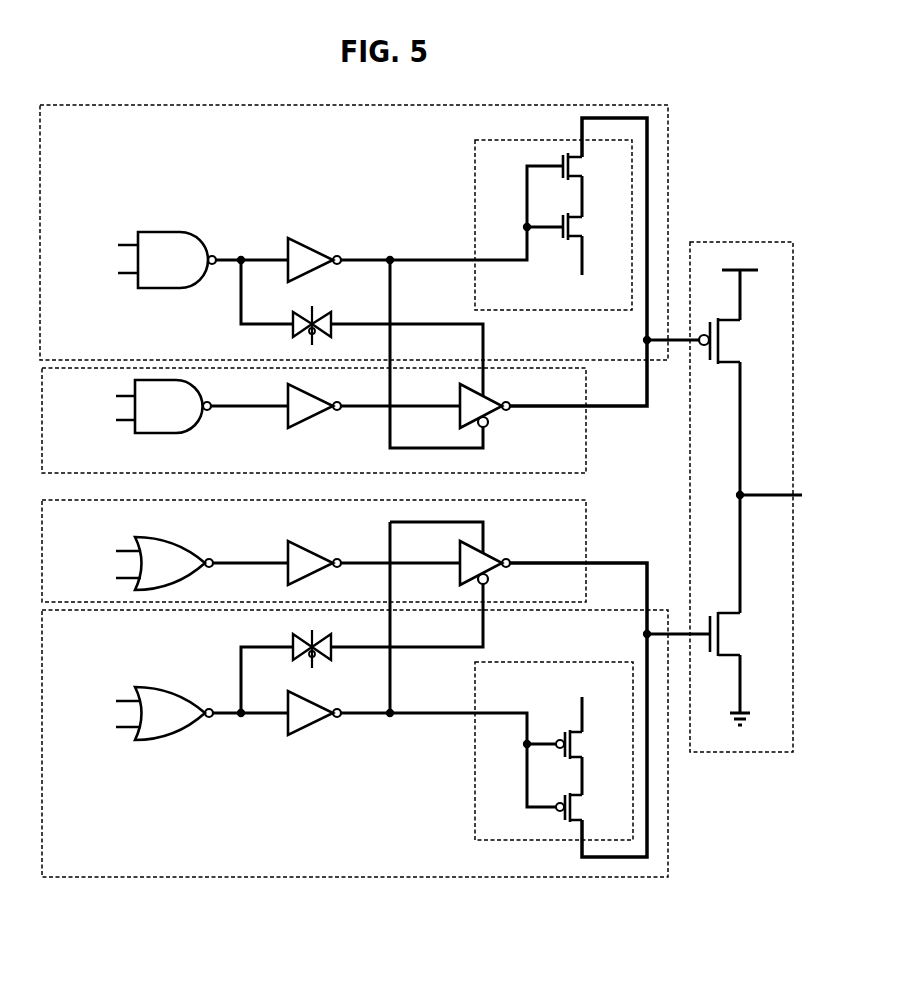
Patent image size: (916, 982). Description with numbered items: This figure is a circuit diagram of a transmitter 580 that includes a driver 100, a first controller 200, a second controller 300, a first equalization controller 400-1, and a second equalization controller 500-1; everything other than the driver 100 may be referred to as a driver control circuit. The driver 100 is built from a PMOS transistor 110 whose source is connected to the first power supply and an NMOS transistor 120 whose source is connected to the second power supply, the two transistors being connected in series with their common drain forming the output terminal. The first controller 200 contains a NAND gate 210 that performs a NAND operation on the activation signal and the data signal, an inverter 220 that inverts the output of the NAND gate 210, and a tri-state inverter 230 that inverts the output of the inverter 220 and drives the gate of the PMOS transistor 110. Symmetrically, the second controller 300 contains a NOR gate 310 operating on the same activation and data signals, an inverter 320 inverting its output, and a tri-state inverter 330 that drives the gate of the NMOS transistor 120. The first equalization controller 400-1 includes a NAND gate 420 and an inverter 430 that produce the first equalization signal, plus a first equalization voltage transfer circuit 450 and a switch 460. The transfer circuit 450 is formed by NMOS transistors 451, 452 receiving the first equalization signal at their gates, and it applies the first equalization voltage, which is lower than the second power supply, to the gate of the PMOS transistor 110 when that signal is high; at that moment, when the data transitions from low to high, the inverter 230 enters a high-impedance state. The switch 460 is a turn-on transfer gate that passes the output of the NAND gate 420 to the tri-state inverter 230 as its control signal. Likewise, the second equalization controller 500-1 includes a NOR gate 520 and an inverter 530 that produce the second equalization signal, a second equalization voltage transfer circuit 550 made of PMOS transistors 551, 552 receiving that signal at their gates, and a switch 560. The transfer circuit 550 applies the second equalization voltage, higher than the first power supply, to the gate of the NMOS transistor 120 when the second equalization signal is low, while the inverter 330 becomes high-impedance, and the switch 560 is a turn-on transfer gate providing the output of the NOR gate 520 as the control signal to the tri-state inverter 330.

The transmitter 580 is at (826, 137).
The first equalization controller 400-1 is at (668, 176).
The NAND gate 420 is at (177, 260).
The inverter 430 is at (318, 252).
The first equalization voltage transfer circuit 450 is at (475, 172).
The NMOS transistor 451 is at (578, 168).
The NMOS transistor 452 is at (578, 229).
The switch 460 is at (292, 333).
The first controller 200 is at (586, 448).
The NAND gate 210 is at (173, 406).
The inverter 220 is at (318, 398).
The inverter 230 is at (457, 401).
The second controller 300 is at (586, 533).
The NOR gate 310 is at (174, 563).
The inverter 320 is at (318, 555).
The inverter 330 is at (457, 559).
The second equalization controller 500-1 is at (668, 845).
The NOR gate 520 is at (174, 713).
The inverter 530 is at (318, 705).
The second equalization voltage transfer circuit 550 is at (475, 816).
The PMOS transistor 551 is at (578, 750).
The PMOS transistor 552 is at (578, 812).
The switch 560 is at (292, 644).
The driver 100 is at (793, 352).
The PMOS transistor 110 is at (733, 347).
The NMOS transistor 120 is at (733, 643).